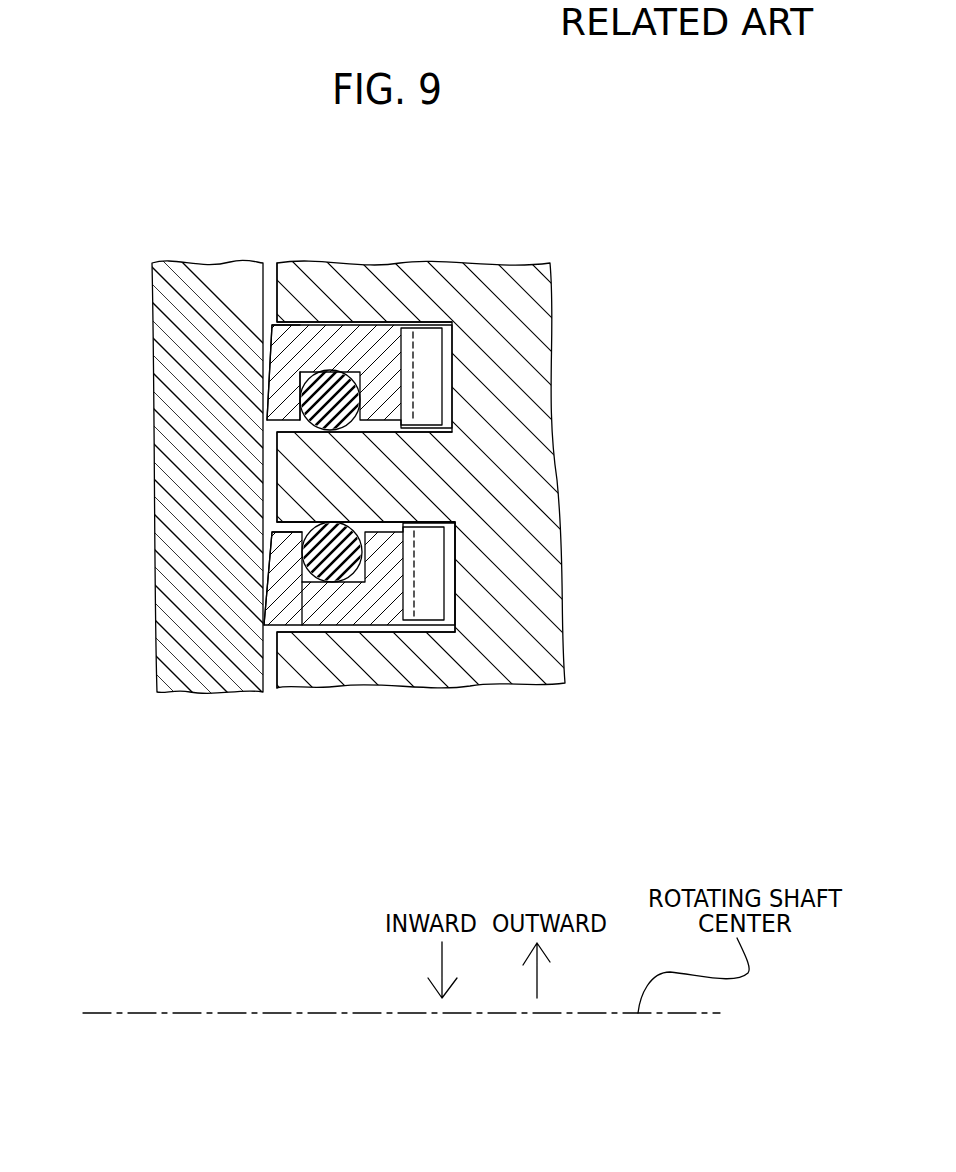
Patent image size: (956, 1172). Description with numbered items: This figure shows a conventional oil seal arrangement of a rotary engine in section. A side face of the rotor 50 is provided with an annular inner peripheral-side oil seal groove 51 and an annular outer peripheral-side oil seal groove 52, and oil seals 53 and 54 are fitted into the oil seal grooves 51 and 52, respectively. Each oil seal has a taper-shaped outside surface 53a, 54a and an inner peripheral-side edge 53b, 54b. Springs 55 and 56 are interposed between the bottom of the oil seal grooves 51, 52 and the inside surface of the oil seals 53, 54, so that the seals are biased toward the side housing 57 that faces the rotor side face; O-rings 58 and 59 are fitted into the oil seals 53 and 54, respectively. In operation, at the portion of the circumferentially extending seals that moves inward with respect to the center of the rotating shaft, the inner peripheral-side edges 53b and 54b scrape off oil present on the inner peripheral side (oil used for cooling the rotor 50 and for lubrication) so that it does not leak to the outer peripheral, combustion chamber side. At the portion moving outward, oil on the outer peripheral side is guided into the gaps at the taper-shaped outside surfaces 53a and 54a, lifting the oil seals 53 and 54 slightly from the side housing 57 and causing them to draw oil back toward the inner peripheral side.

The rotor 50 is at (481, 263).
The inner peripheral-side oil seal groove 51 is at (372, 610).
The outer peripheral-side oil seal groove 52 is at (340, 322).
The oil seal 53 is at (297, 632).
The taper-shaped outside surface 53a is at (266, 540).
The inner peripheral-side edge 53b is at (266, 627).
The oil seal 54 is at (295, 322).
The taper-shaped outside surface 54a is at (268, 364).
The inner peripheral-side edge 54b is at (305, 405).
The spring 55 is at (435, 590).
The spring 56 is at (437, 385).
The side housing 57 is at (173, 307).
The O-ring 58 is at (400, 513).
The O-ring 59 is at (420, 447).